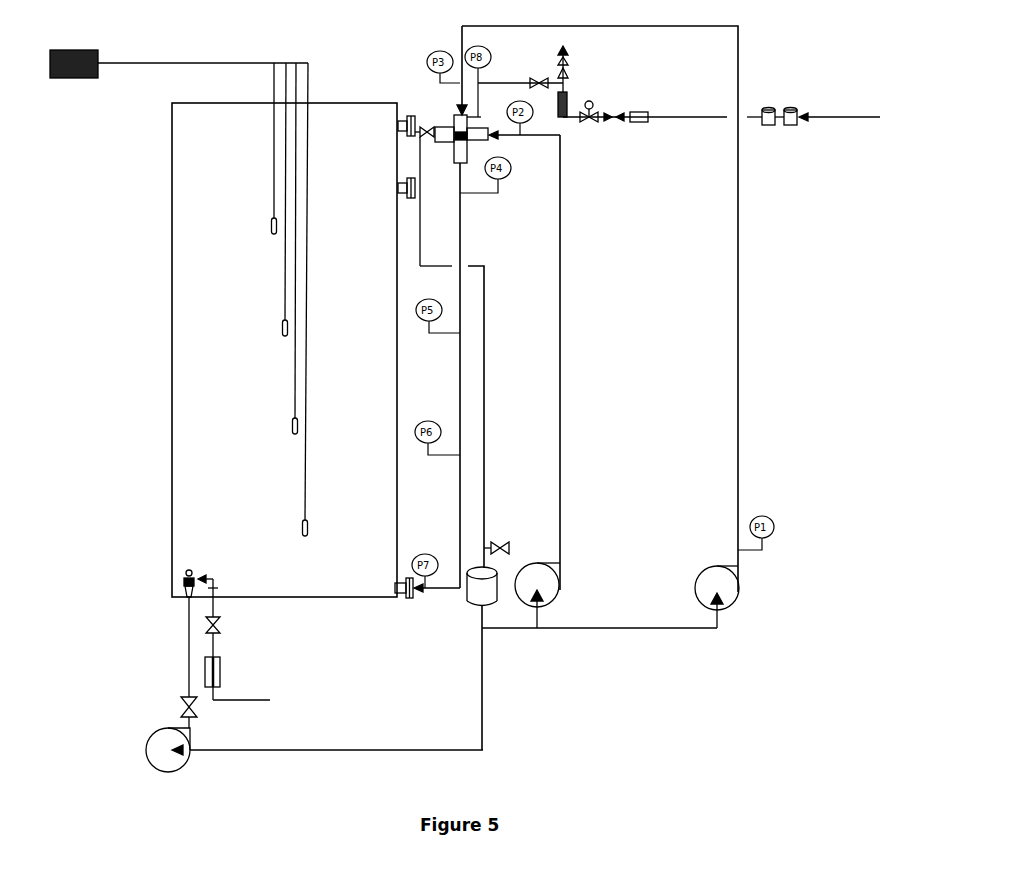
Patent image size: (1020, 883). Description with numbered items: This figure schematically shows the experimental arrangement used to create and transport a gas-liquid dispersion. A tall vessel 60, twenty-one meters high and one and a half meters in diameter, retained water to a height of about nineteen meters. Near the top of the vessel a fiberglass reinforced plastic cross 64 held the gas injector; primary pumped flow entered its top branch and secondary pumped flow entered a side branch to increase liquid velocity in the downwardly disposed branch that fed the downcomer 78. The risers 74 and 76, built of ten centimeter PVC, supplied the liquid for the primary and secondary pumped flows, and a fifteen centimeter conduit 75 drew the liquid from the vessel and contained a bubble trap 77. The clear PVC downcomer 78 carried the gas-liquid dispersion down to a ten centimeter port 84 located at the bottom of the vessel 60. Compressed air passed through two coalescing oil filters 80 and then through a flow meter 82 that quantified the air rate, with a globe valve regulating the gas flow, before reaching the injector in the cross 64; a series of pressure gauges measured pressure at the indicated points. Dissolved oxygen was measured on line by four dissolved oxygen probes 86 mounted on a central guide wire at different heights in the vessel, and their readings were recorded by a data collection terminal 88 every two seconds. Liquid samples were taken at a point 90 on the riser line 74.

The vessel 60 is at (172, 395).
The fiberglass reinforced plastic cross 64 is at (452, 120).
The riser 74 is at (560, 339).
The conduit 75 is at (486, 327).
The riser 76 is at (739, 364).
The bubble trap 77 is at (497, 605).
The downcomer 78 is at (462, 207).
The coalescing oil filters 80 is at (775, 102).
The flow meter 82 is at (572, 100).
The port 84 is at (407, 600).
The dissolved oxygen probes 86 is at (268, 234).
The data collection terminal 88 is at (68, 80).
The sampling point 90 is at (512, 540).